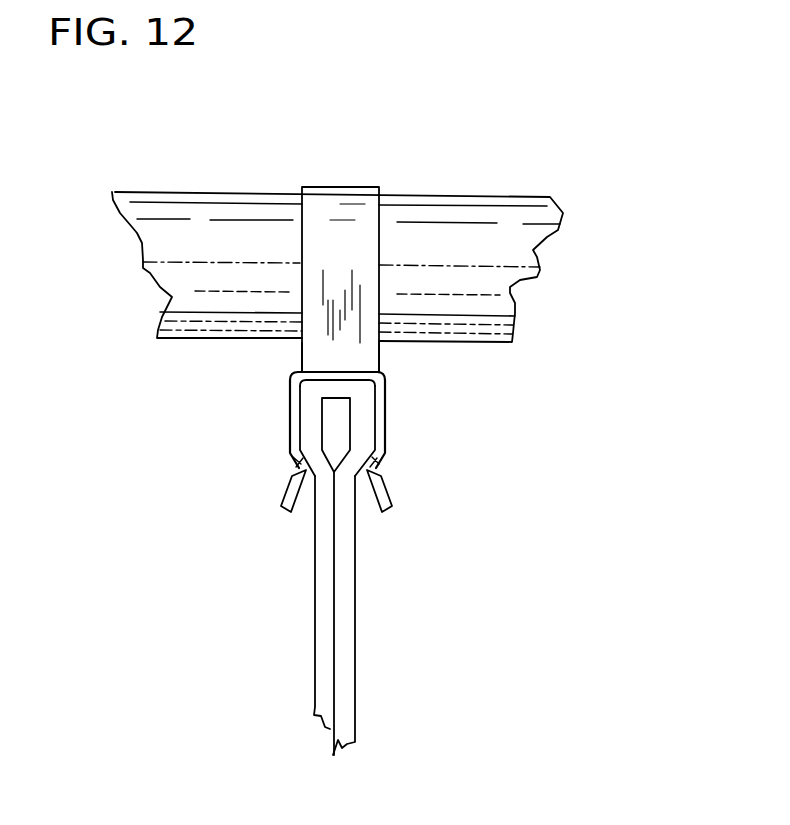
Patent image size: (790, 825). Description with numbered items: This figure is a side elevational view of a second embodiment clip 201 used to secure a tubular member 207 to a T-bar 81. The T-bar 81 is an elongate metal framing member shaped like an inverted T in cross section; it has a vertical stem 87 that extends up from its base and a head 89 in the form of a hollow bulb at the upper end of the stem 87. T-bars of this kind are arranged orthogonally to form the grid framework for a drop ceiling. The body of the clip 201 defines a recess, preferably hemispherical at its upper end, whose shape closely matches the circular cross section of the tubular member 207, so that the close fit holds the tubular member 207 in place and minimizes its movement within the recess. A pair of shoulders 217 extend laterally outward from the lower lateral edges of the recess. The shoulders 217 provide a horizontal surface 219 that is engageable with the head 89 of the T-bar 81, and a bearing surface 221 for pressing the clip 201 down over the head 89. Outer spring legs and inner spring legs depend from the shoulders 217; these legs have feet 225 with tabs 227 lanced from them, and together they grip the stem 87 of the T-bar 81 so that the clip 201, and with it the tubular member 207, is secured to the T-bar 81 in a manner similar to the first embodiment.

The clip 201 is at (367, 184).
The tubular member 207 is at (553, 207).
The shoulders 217 is at (322, 372).
The bearing surface 221 is at (366, 368).
The horizontal surface 219 is at (323, 382).
The head 89 is at (361, 427).
The tabs 227 is at (370, 465).
The feet 225 is at (293, 494).
The stem 87 is at (322, 637).
The T-bar 81 is at (356, 615).